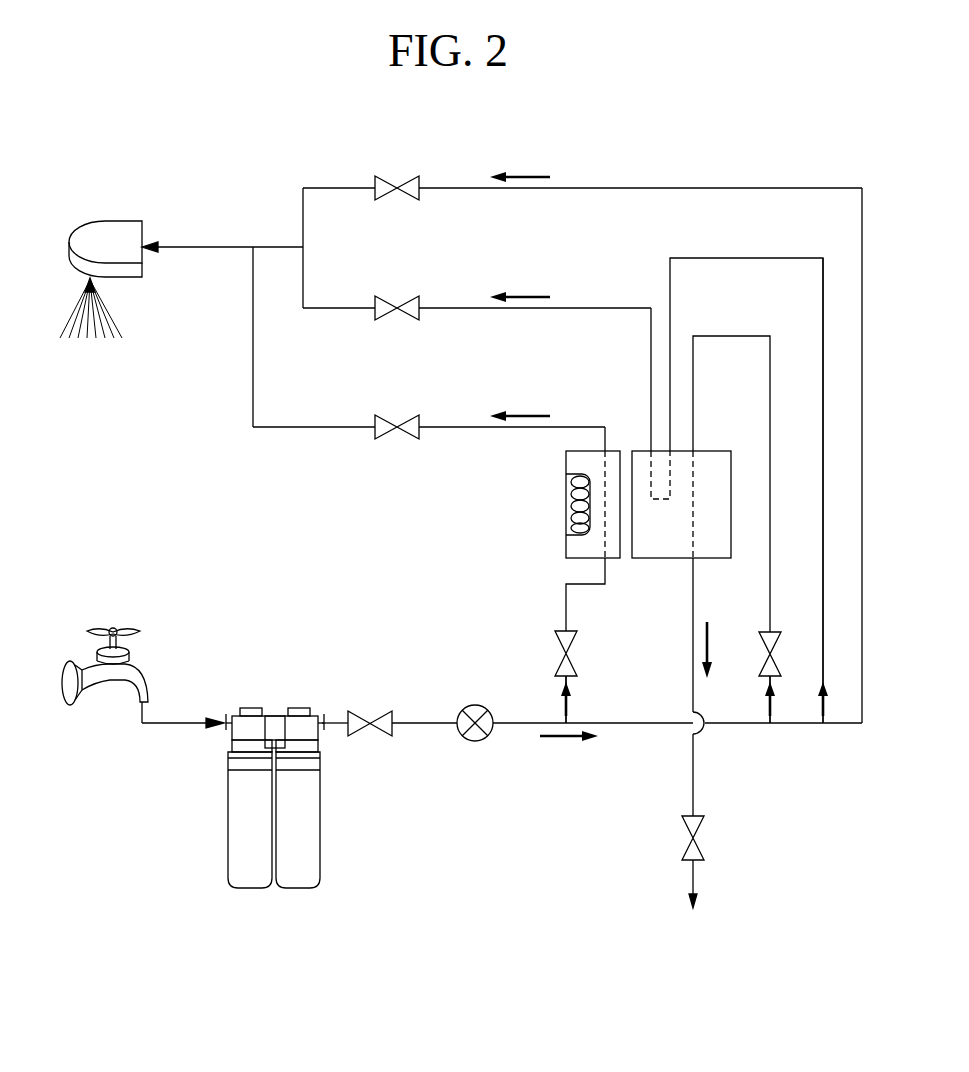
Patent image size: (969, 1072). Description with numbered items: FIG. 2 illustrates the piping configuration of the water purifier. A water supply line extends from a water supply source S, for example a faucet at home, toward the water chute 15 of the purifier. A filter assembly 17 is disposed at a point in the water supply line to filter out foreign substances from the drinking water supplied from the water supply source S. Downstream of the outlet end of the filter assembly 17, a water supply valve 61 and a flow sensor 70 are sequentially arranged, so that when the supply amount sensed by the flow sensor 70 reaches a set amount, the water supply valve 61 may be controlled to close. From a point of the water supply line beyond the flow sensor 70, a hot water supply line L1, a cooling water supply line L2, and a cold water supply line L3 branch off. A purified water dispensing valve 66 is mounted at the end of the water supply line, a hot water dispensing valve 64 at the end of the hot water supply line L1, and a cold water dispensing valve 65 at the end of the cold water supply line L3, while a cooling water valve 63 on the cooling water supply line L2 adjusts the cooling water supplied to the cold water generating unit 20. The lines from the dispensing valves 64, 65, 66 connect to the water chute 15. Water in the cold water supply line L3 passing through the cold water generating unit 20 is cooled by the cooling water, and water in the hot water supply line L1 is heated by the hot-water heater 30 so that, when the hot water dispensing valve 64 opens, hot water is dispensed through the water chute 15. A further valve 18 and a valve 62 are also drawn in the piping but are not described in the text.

The water chute 15 is at (113, 227).
The filter assembly 17 is at (251, 710).
The drain valve 18 is at (698, 846).
The cold water generating unit 20 is at (718, 452).
The hot-water heater 30 is at (566, 492).
The water supply valve 61 is at (365, 718).
The heater valve 62 is at (557, 645).
The cooling water valve 63 is at (779, 645).
The hot water dispensing valve 64 is at (398, 420).
The cold water dispensing valve 65 is at (400, 300).
The purified water dispensing valve 66 is at (400, 180).
The flow sensor 70 is at (475, 708).
The water supply source S is at (112, 694).
The hot water supply line L1 is at (565, 707).
The cooling water supply line L2 is at (768, 708).
The cold water supply line L3 is at (822, 708).